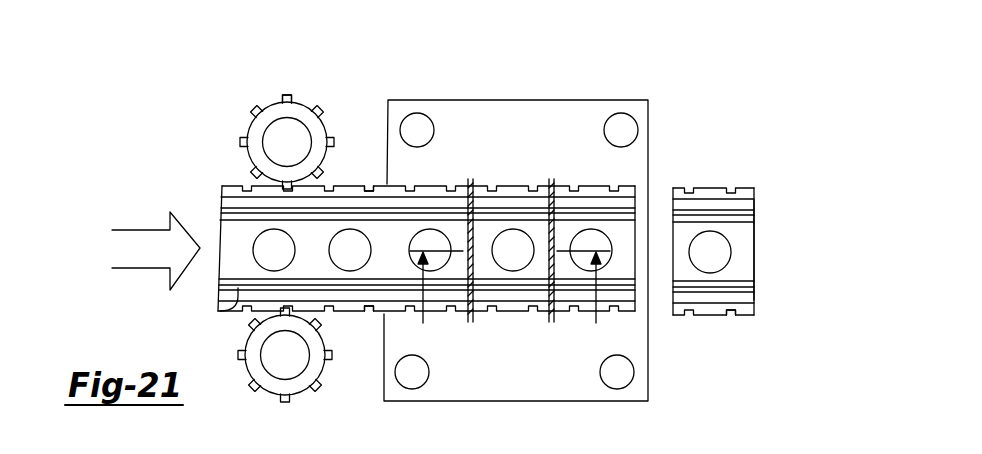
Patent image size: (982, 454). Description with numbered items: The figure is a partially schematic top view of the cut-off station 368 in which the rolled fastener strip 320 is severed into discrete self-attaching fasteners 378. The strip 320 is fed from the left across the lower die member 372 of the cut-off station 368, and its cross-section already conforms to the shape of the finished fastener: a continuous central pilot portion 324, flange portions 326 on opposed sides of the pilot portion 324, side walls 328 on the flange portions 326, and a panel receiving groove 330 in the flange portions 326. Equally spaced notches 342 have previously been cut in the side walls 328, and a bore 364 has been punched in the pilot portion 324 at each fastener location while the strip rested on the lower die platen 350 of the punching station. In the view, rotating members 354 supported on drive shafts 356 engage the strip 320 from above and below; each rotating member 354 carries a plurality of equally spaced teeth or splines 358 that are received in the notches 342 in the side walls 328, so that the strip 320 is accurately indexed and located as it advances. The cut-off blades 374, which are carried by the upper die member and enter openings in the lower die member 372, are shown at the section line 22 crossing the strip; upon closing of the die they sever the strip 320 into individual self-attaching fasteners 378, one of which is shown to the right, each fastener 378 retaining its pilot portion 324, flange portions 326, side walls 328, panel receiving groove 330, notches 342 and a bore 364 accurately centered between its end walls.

The section line 22- 22 is at (510, 304).
The fastener strip 320 is at (195, 188).
The central pilot portion 324 is at (228, 240).
The flange portions 326 is at (705, 207).
The side walls 328 is at (513, 317).
The panel receiving groove 330 is at (220, 312).
The notches 342 is at (370, 183).
The lower die platen 350 is at (757, 215).
The rotating members 354 is at (302, 110).
The drive shafts 356 is at (277, 137).
The teeth or splines 358 is at (290, 97).
The bore 364 is at (280, 237).
The cut-off station 368 is at (676, 94).
The lower die member 372 is at (463, 98).
The cut-off blades 374 is at (551, 180).
The self-attaching fasteners 378 is at (768, 186).